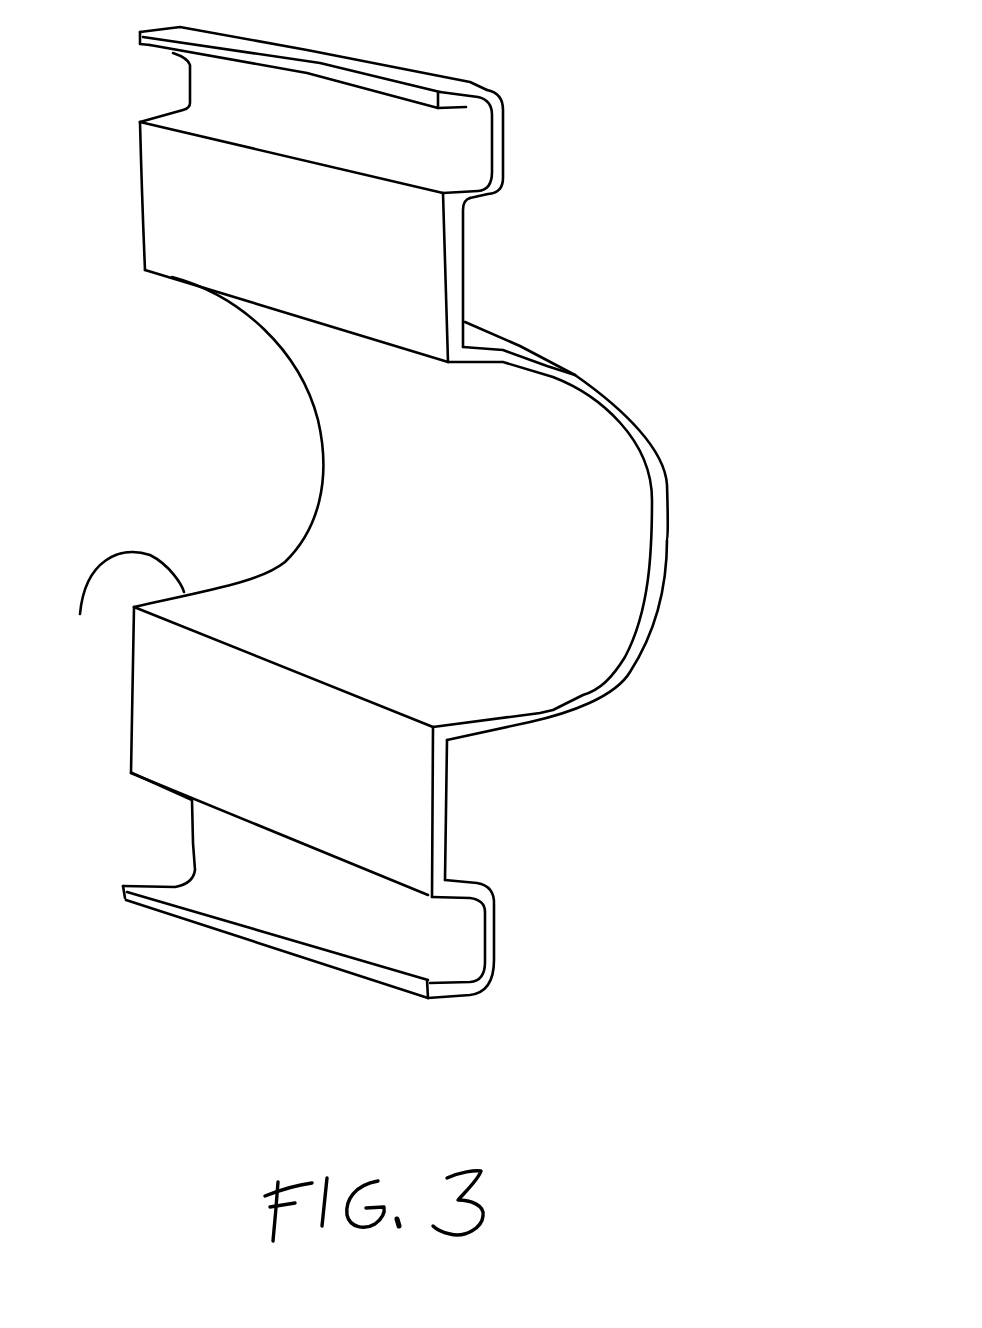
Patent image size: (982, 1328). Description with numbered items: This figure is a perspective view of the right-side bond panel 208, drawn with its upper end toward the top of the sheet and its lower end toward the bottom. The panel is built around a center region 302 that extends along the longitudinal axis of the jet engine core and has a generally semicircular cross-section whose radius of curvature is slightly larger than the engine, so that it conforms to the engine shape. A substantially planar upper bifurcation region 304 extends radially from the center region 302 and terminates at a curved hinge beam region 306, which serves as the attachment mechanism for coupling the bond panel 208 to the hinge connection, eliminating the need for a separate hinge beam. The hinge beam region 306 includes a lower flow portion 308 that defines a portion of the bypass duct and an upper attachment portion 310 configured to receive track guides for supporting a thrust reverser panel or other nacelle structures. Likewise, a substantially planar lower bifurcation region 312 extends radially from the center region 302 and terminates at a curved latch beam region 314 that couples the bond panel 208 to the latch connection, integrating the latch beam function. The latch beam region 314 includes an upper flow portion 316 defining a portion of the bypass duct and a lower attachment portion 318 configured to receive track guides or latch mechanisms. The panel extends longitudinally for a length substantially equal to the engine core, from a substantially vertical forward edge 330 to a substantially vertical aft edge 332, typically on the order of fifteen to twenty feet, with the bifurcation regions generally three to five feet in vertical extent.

The right-side bond panel 208 is at (413, 556).
The center region 302 is at (693, 512).
The upper bifurcation region 304 is at (247, 240).
The hinge beam region 306 is at (410, 187).
The lower flow portion 308 is at (478, 203).
The upper attachment portion 310 is at (508, 118).
The lower bifurcation region 312 is at (183, 728).
The latch beam region 314 is at (382, 894).
The upper flow portion 316 is at (453, 871).
The lower attachment portion 318 is at (498, 973).
The forward edge 330 is at (143, 197).
The aft edge 332 is at (457, 277).